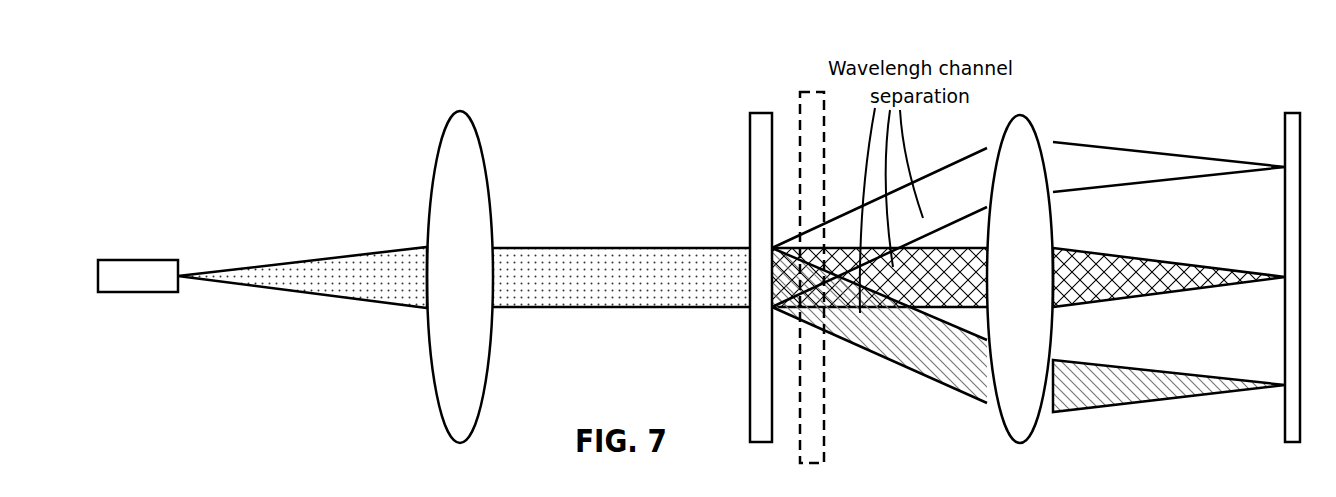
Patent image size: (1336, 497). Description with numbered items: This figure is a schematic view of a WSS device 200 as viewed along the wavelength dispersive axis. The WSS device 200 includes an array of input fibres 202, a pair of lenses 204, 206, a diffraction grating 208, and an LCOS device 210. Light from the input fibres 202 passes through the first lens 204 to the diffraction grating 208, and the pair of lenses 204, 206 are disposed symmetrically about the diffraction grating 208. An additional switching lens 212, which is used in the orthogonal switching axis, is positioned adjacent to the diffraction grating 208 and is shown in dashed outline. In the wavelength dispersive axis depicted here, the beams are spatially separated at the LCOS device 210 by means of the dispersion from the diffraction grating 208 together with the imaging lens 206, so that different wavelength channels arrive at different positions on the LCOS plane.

The WSS device 200 is at (687, 92).
The array of input fibres 202 is at (153, 259).
The lens 204 is at (452, 126).
The imaging lens 206 is at (1027, 117).
The diffraction grating 208 is at (748, 113).
The LCOS device 210 is at (1285, 127).
The switching lens 212 is at (812, 90).